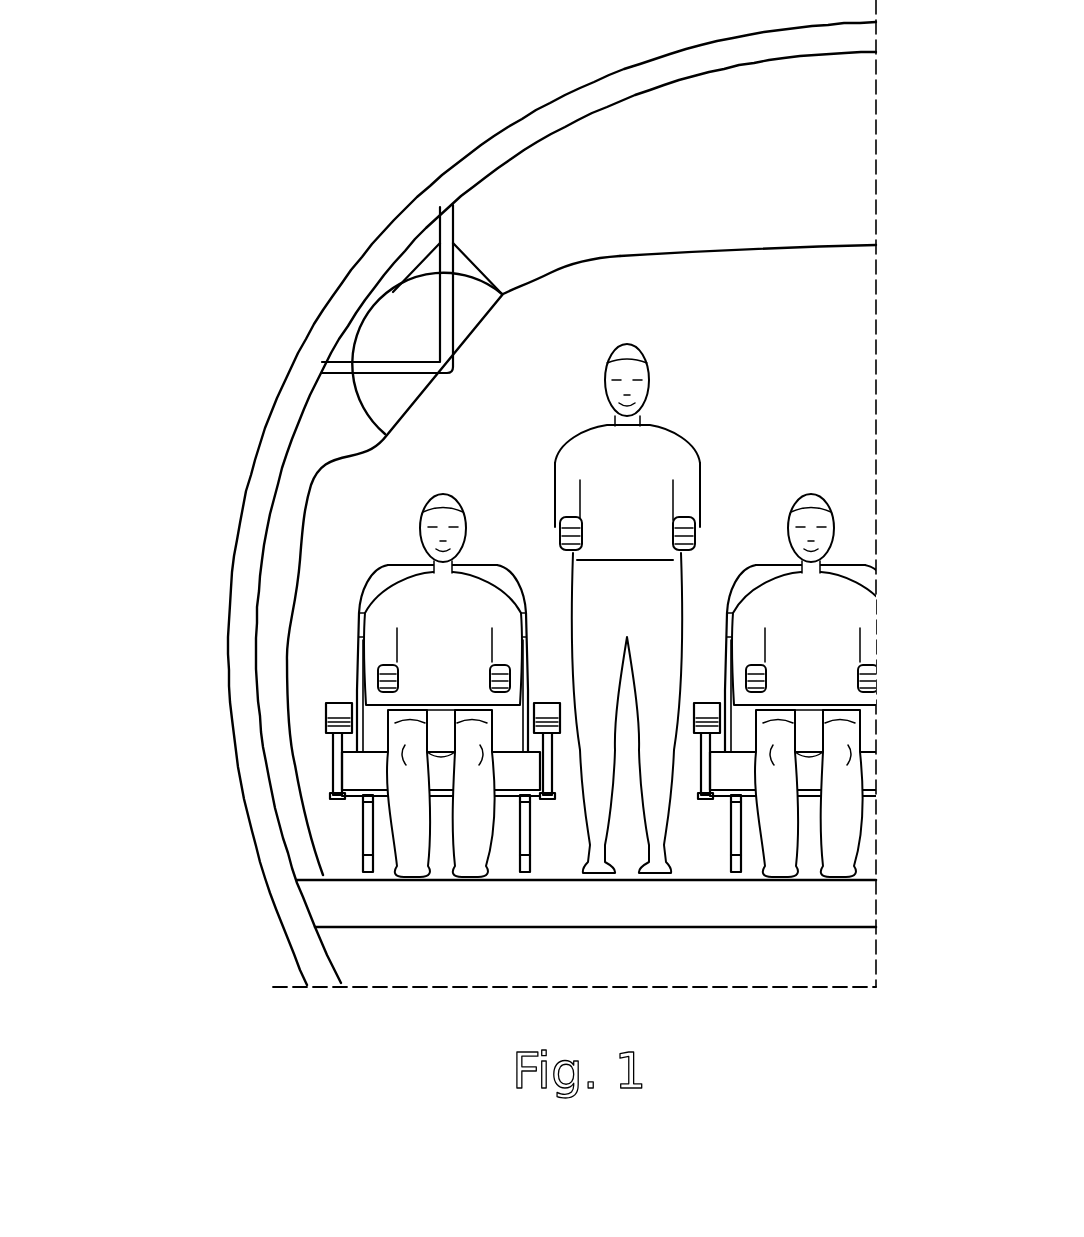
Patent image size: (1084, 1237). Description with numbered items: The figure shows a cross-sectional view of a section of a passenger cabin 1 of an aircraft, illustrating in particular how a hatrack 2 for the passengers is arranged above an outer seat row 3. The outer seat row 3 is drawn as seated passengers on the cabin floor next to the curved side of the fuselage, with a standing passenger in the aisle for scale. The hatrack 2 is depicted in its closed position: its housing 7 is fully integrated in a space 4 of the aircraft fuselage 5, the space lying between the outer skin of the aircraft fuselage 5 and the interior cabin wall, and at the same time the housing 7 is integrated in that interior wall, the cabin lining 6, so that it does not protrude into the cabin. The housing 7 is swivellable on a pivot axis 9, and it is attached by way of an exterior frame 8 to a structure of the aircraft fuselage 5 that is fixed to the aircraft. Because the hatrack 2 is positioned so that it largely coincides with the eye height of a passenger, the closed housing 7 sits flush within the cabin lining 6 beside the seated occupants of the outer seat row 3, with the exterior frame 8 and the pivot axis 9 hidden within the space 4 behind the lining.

The passenger cabin 1 is at (824, 344).
The hatrack 2 is at (328, 420).
The outer seat row 3 is at (338, 772).
The space 4 is at (533, 190).
The aircraft fuselage 5 is at (222, 563).
The cabin lining 6 is at (684, 250).
The housing 7 is at (378, 352).
The exterior frame 8 is at (426, 226).
The pivot axis 9 is at (443, 355).